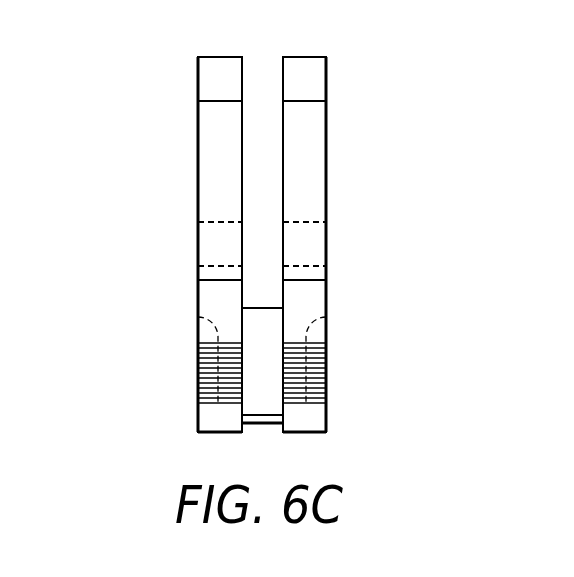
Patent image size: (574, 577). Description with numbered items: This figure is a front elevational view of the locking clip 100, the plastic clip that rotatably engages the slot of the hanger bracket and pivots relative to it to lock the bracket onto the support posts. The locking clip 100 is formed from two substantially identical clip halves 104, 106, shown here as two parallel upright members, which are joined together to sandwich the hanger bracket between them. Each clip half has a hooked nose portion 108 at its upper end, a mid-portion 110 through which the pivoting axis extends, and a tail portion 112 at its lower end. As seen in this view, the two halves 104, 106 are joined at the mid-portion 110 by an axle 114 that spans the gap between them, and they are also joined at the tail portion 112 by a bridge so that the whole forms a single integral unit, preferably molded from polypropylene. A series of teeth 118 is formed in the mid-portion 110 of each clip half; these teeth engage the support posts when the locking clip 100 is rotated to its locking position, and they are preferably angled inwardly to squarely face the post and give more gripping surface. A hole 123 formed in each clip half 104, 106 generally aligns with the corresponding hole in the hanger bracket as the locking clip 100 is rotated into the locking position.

The locking clip 100 is at (186, 181).
The hooked nose portion 108 is at (328, 77).
The clip half 106 is at (328, 158).
The hole 123 is at (193, 243).
The axle 114 is at (260, 308).
The clip half 104 is at (198, 303).
The mid-portion 110 is at (327, 305).
The teeth 118 is at (207, 370).
The tail portion 112 is at (305, 433).